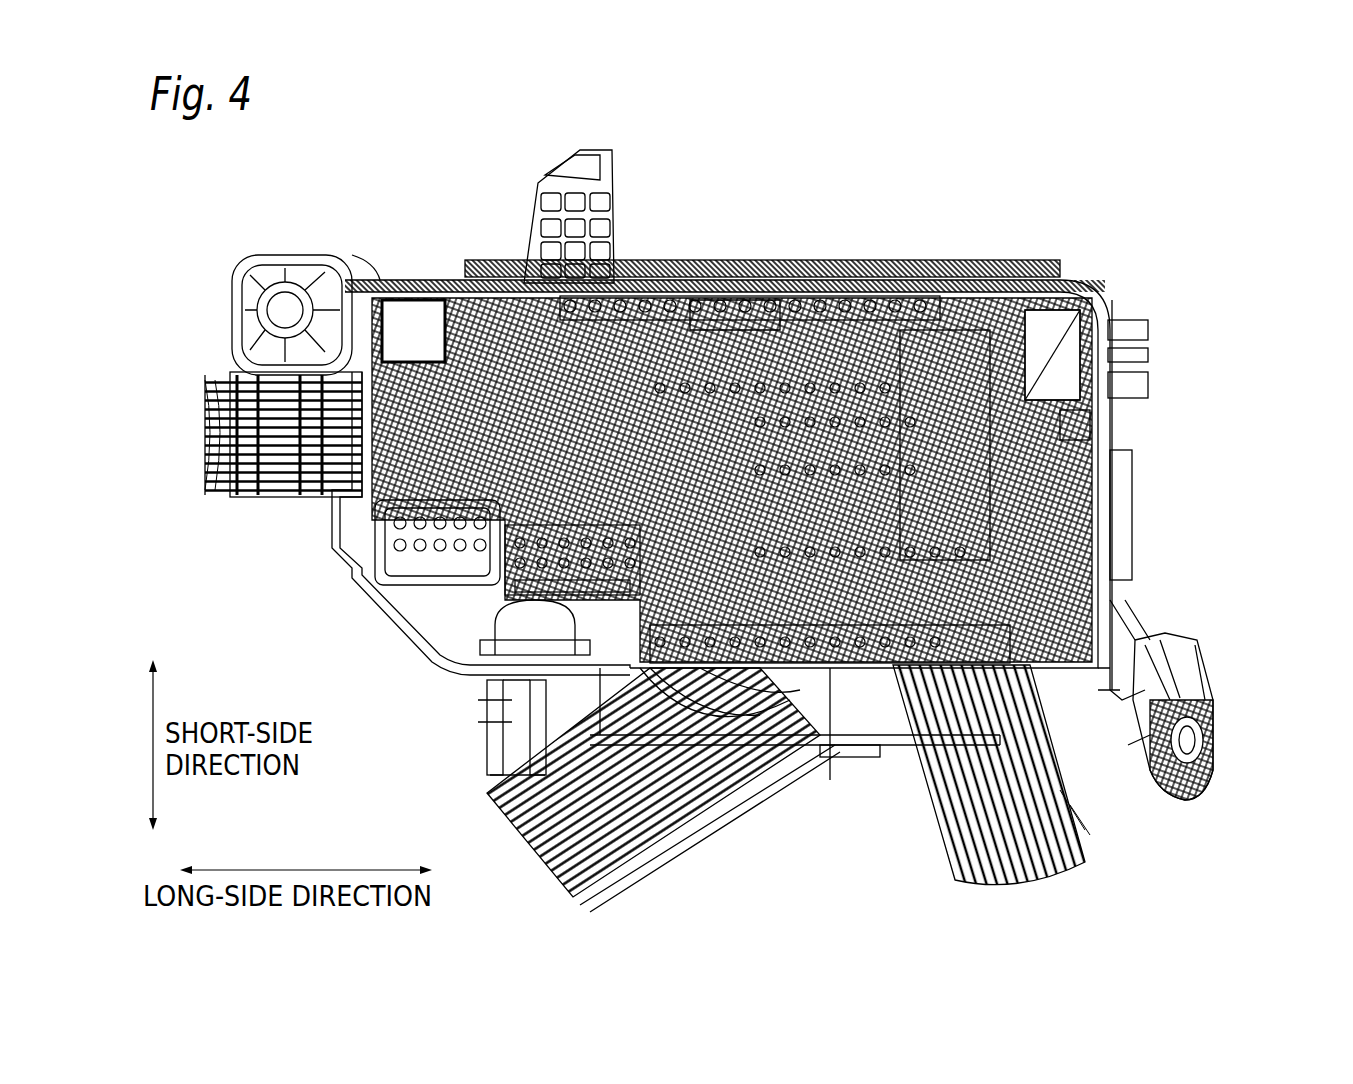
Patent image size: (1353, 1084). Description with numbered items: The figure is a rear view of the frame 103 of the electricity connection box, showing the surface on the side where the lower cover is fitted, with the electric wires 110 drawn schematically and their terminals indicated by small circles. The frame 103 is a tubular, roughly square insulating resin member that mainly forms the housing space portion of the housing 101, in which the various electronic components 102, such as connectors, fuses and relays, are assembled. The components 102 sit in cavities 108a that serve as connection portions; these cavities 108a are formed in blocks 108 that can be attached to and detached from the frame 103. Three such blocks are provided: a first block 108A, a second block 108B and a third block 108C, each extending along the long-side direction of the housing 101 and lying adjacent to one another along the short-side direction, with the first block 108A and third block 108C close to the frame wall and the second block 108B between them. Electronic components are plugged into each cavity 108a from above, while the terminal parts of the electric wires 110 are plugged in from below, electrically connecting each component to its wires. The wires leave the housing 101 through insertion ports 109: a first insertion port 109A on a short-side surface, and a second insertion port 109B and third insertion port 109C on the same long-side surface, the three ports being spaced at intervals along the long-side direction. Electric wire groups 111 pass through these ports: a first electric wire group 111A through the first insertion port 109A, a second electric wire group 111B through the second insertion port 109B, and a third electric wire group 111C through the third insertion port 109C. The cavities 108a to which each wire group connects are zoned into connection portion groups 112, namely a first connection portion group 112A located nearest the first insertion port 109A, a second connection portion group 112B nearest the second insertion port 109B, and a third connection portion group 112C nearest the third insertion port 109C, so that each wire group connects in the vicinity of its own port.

The housing 101 is at (790, 504).
The electronic component 102 is at (497, 573).
The frame 103 is at (1112, 300).
The block 108 is at (914, 500).
The first block 108A is at (815, 288).
The second block 108B is at (800, 410).
The third block 108C is at (840, 663).
The cavity 108a is at (770, 300).
The insertion port 109 is at (645, 650).
The first insertion port 109A is at (262, 500).
The second insertion port 109B is at (615, 870).
The third insertion port 109C is at (937, 853).
The electric wire 110 is at (920, 360).
The electric wire group 111 is at (686, 591).
The first electric wire group 111A is at (218, 372).
The second electric wire group 111B is at (700, 805).
The third electric wire group 111C is at (1058, 873).
The connection portion group 112 is at (826, 450).
The first connection portion group 112A is at (540, 283).
The second connection portion group 112B is at (550, 697).
The third connection portion group 112C is at (1065, 498).